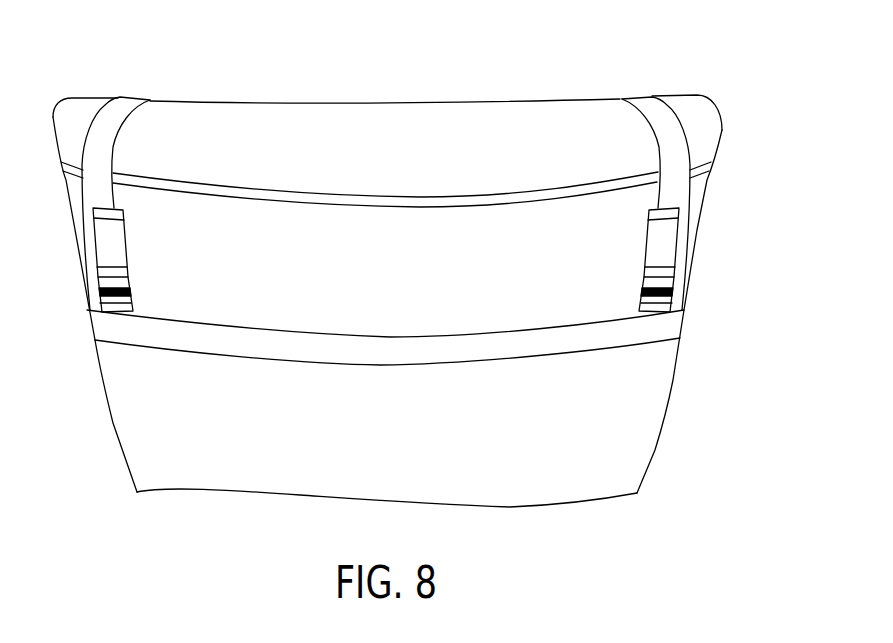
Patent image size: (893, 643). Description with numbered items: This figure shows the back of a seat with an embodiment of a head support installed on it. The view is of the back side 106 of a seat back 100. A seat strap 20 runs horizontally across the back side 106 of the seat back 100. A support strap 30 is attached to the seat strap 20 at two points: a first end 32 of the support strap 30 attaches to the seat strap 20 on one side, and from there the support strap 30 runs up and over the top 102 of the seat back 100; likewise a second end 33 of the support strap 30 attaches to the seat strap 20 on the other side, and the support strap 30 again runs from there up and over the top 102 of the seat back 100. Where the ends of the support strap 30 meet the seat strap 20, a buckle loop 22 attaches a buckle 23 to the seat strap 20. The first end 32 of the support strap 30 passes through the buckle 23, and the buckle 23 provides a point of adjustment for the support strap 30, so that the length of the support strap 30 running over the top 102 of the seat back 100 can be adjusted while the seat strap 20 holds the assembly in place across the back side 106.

The seat back 100 is at (697, 243).
The top of seat back 102 is at (440, 104).
The back side of seat back 106 is at (401, 444).
The support strap 30 is at (112, 127).
The first end of support strap 32 is at (117, 242).
The second end of support strap 33 is at (657, 240).
The buckle 23 is at (128, 290).
The buckle loop 22 is at (132, 315).
The seat strap 20 is at (378, 343).